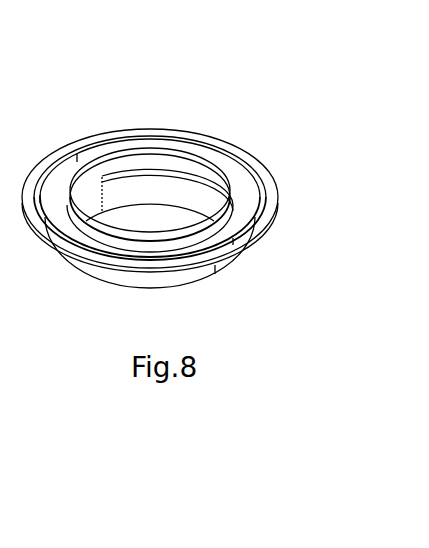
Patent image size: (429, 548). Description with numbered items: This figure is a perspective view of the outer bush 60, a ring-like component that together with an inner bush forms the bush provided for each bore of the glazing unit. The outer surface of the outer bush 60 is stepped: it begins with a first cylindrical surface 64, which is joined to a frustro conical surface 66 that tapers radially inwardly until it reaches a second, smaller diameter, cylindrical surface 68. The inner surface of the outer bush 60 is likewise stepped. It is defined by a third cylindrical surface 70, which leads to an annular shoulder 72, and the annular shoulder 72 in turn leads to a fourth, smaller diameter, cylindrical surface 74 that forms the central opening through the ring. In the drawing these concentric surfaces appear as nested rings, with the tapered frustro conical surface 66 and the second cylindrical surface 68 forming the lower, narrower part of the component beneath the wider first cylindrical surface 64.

The outer bush 60 is at (313, 106).
The first cylindrical surface 64 is at (275, 212).
The frustro conical surface 66 is at (188, 267).
The second cylindrical surface 68 is at (105, 277).
The third cylindrical surface 70 is at (105, 147).
The annular shoulder 72 is at (213, 168).
The fourth cylindrical surface 74 is at (146, 190).